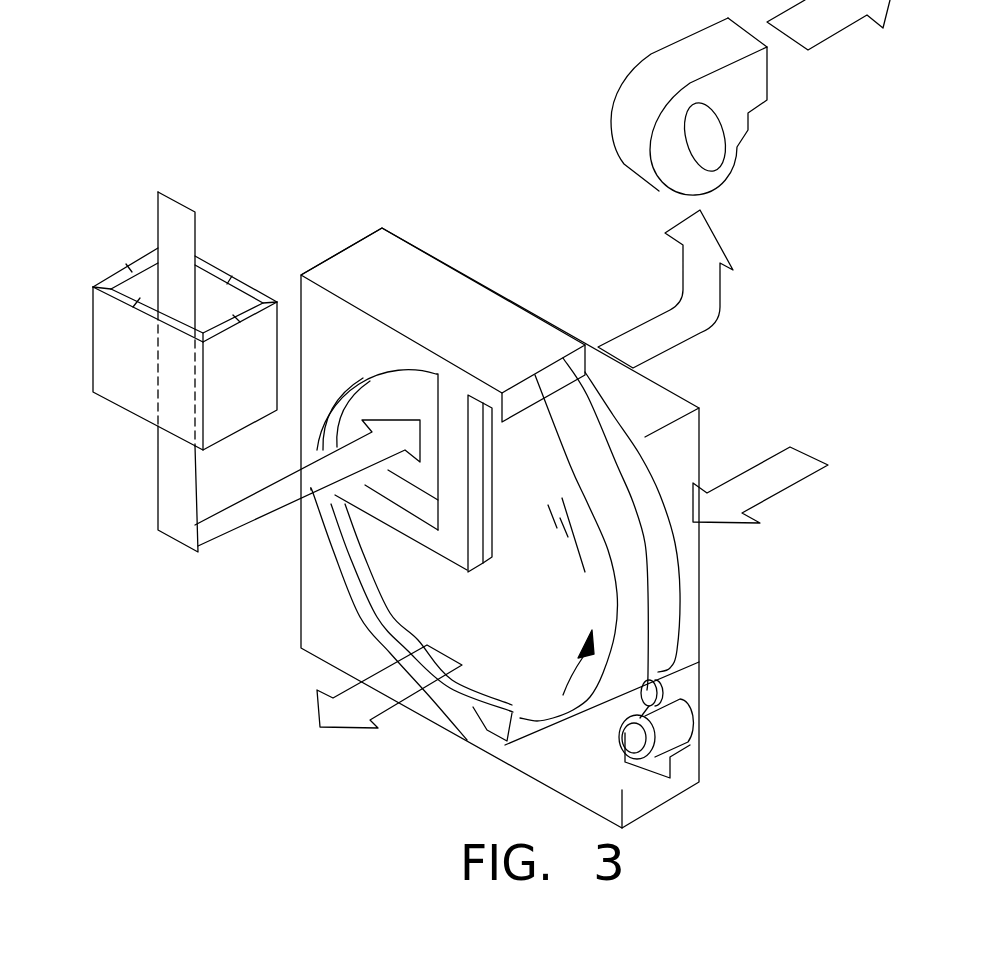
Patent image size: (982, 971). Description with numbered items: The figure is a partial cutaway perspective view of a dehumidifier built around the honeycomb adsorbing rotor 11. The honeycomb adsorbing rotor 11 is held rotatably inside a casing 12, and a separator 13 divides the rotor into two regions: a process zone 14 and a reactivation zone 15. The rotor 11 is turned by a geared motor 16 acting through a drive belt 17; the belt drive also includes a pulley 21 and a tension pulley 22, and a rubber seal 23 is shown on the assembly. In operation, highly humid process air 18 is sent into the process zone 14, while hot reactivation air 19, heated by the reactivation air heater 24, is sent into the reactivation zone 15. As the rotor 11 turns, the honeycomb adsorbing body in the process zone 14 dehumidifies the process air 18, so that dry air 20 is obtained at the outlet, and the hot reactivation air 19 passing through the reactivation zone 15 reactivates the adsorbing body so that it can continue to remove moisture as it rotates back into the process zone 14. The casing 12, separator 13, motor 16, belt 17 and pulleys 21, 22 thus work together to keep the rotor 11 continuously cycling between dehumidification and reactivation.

The honeycomb adsorbing rotor 11 is at (607, 428).
The casing 12 is at (422, 270).
The separator 13 is at (407, 527).
The process zone 14 is at (523, 695).
The reactivation zone 15 is at (382, 383).
The geared motor 16 is at (693, 733).
The drive belt 17 is at (648, 603).
The process air 18 is at (813, 457).
The reactivation air 19 is at (168, 517).
The dry air 20 is at (313, 712).
The pulley 21 is at (653, 767).
The tension pulley 22 is at (665, 684).
The rubber seal 23 is at (477, 708).
The reactivation air heater 24 is at (92, 332).